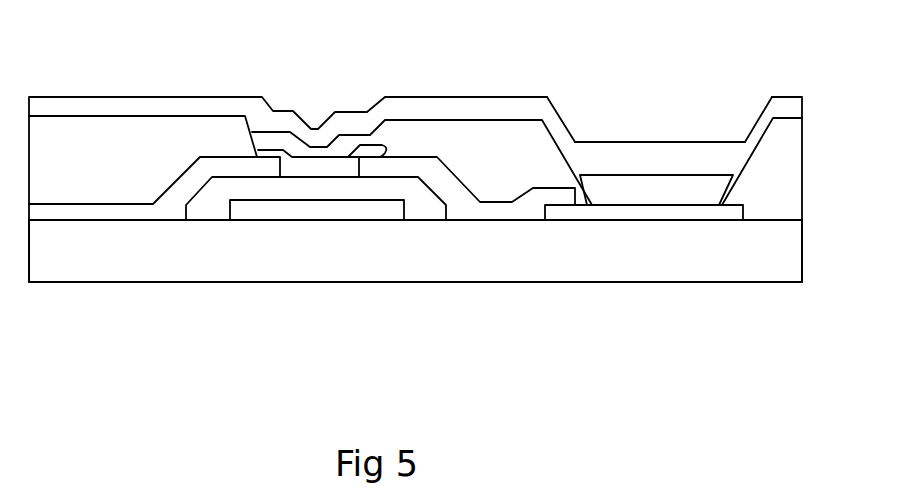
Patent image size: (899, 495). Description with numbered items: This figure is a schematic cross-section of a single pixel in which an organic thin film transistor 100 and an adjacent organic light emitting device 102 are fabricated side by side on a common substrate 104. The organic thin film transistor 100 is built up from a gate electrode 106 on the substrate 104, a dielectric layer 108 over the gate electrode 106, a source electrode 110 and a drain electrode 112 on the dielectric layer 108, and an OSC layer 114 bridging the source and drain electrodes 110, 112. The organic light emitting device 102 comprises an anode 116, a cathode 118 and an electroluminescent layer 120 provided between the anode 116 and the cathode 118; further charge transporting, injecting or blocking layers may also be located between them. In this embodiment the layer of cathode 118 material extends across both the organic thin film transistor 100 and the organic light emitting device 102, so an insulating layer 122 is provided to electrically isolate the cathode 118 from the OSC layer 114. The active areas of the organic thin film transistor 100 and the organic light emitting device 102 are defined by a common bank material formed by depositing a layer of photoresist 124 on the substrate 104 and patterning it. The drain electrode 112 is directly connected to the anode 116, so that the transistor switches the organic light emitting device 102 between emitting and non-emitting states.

The organic thin film transistor 100 is at (362, 92).
The organic light emitting device 102 is at (670, 120).
The common substrate 104 is at (686, 270).
The gate electrode 106 is at (322, 232).
The dielectric layer 108 is at (396, 183).
The source electrode 110 is at (168, 230).
The drain electrode 112 is at (467, 215).
The OSC layer 114 is at (320, 155).
The anode 116 is at (736, 212).
The cathode 118 is at (705, 155).
The electroluminescent layer 120 is at (628, 181).
The insulating layer 122 is at (284, 125).
The layer of photoresist 124 is at (786, 145).